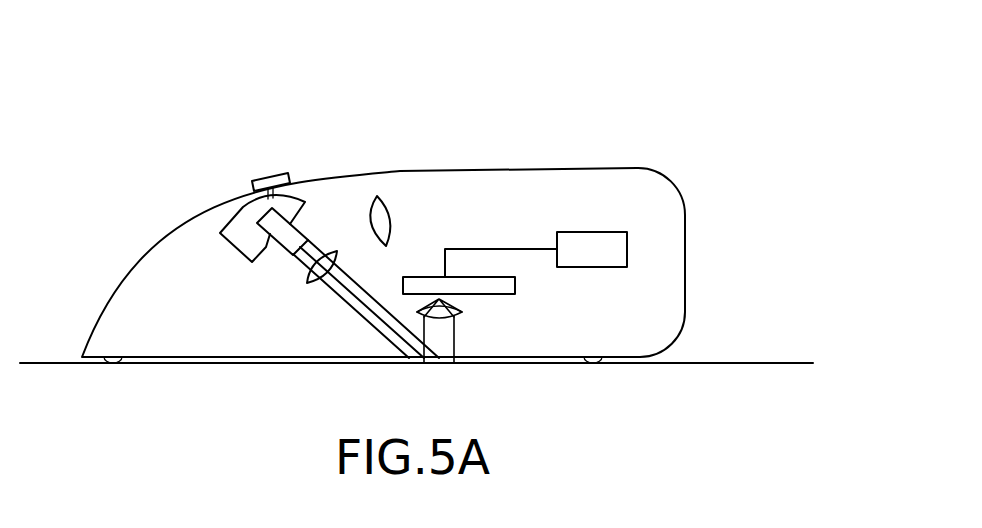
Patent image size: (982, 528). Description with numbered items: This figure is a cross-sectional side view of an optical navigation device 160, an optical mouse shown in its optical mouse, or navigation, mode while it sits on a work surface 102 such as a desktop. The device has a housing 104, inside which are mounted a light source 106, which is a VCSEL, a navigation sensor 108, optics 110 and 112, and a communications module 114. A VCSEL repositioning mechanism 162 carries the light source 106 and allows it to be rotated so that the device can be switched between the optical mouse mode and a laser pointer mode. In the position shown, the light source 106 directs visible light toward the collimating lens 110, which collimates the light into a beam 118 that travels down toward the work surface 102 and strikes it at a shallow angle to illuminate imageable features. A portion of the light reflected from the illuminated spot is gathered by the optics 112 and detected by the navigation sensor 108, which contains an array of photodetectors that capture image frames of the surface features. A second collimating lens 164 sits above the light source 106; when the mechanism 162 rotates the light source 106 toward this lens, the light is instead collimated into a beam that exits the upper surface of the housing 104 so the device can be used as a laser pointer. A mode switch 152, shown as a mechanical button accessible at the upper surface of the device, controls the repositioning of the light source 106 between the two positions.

The optical navigation device 160 is at (553, 71).
The work surface 102 is at (750, 363).
The housing 104 is at (567, 168).
The VCSEL repositioning mechanism 162 is at (223, 215).
The mode switch 152 is at (268, 177).
The light source 106 is at (303, 228).
The collimating lens 110 is at (307, 282).
The collimated light 118 is at (360, 318).
The collimating lens 164 is at (387, 212).
The navigation sensor 108 is at (517, 284).
The communications module 114 is at (628, 248).
The optics 112 is at (460, 310).